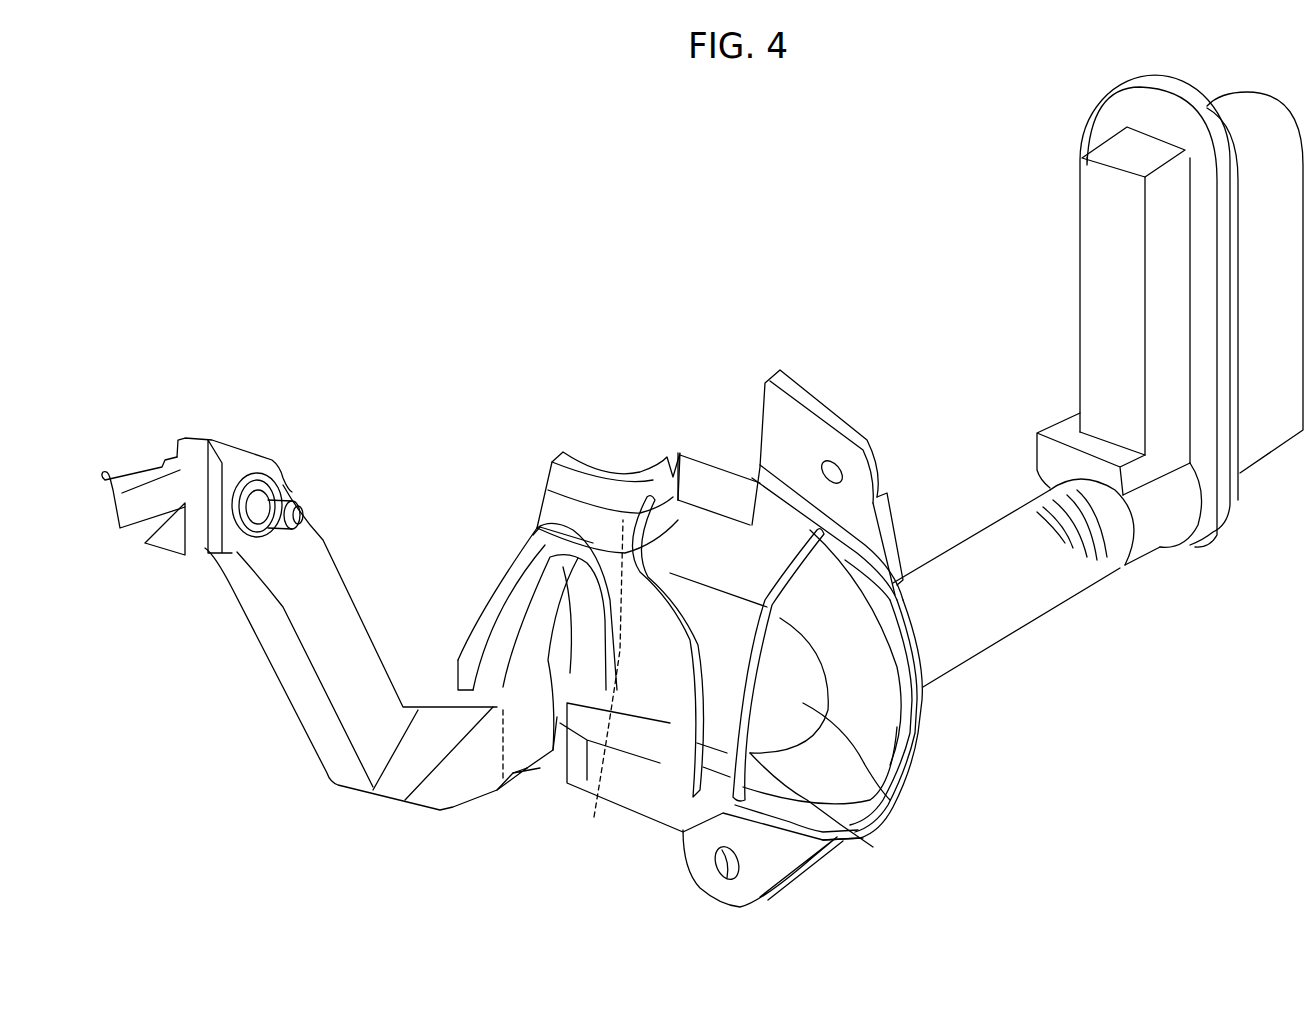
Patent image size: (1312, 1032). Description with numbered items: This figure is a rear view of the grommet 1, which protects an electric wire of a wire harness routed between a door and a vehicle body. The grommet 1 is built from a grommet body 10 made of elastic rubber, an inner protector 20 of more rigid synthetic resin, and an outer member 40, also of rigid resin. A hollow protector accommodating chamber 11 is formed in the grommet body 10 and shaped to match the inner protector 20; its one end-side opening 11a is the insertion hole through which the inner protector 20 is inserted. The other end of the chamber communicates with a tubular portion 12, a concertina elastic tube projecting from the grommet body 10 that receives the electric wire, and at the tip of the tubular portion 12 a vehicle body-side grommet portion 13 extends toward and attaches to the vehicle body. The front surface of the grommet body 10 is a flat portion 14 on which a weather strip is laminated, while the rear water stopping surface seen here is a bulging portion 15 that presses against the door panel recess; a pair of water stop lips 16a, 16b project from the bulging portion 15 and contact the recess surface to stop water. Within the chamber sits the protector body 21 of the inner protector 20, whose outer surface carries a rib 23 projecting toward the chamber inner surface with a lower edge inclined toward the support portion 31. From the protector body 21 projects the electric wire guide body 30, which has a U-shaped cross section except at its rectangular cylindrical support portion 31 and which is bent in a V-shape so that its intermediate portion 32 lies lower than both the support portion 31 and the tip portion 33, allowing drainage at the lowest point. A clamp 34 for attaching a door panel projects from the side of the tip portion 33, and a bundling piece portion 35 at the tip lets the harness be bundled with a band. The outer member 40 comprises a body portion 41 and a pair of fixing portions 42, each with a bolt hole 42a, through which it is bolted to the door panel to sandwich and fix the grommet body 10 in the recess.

The grommet 1 is at (897, 237).
The grommet body 10 is at (910, 773).
The protector accommodating chamber 11 is at (603, 624).
The one end-side opening 11a is at (600, 572).
The tubular portion 12 is at (1045, 608).
The vehicle body-side grommet portion 13 is at (1102, 132).
The flat portion 14 is at (907, 749).
The bulging portion 15 is at (897, 809).
The water stop lip 16a is at (660, 823).
The water stop lip 16b is at (857, 841).
The inner protector 20 is at (388, 539).
The protector body 21 is at (550, 776).
The rib 23 is at (601, 684).
The electric wire guide body 30 is at (304, 724).
The support portion 31 is at (537, 531).
The intermediate portion 32 is at (470, 802).
The tip portion 33 is at (213, 441).
The clamp 34 is at (283, 486).
The bundling piece portion 35 is at (143, 479).
The outer member 40 is at (833, 403).
The body portion 41 is at (898, 513).
The fixing portion 42 is at (805, 385).
The bolt hole 42a is at (836, 466).